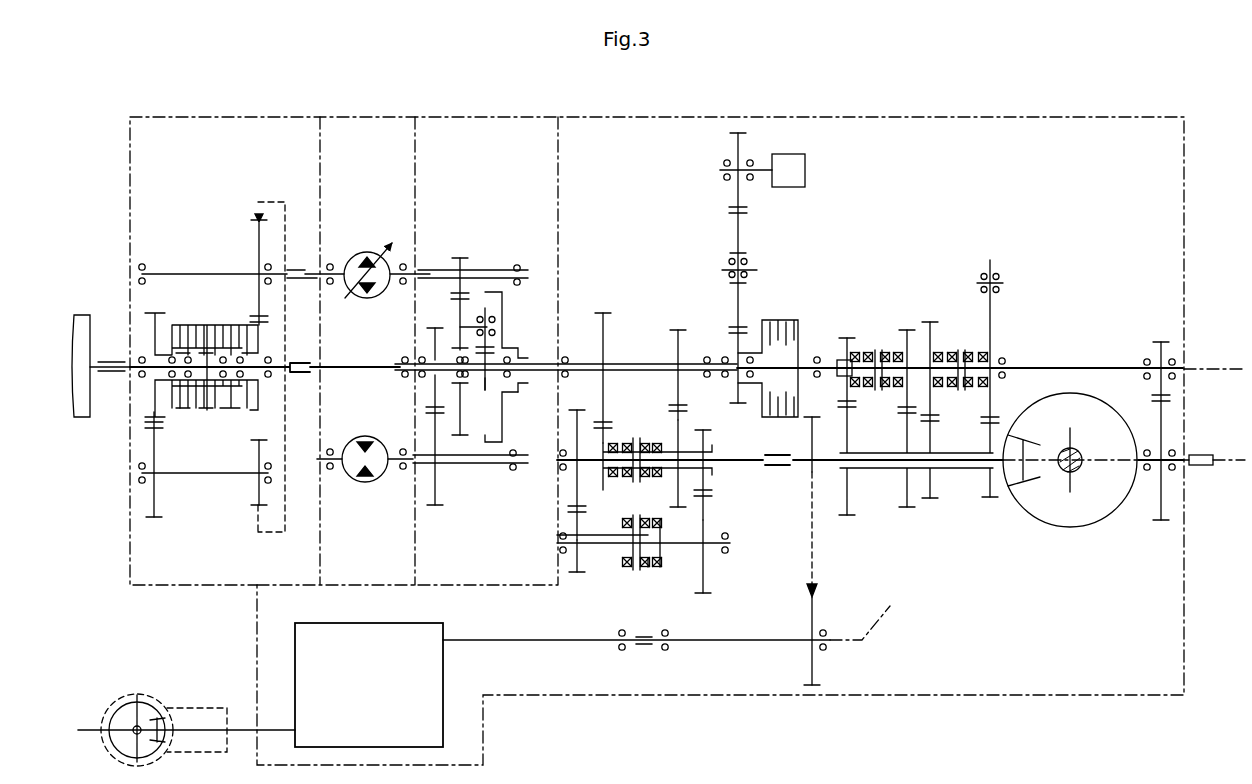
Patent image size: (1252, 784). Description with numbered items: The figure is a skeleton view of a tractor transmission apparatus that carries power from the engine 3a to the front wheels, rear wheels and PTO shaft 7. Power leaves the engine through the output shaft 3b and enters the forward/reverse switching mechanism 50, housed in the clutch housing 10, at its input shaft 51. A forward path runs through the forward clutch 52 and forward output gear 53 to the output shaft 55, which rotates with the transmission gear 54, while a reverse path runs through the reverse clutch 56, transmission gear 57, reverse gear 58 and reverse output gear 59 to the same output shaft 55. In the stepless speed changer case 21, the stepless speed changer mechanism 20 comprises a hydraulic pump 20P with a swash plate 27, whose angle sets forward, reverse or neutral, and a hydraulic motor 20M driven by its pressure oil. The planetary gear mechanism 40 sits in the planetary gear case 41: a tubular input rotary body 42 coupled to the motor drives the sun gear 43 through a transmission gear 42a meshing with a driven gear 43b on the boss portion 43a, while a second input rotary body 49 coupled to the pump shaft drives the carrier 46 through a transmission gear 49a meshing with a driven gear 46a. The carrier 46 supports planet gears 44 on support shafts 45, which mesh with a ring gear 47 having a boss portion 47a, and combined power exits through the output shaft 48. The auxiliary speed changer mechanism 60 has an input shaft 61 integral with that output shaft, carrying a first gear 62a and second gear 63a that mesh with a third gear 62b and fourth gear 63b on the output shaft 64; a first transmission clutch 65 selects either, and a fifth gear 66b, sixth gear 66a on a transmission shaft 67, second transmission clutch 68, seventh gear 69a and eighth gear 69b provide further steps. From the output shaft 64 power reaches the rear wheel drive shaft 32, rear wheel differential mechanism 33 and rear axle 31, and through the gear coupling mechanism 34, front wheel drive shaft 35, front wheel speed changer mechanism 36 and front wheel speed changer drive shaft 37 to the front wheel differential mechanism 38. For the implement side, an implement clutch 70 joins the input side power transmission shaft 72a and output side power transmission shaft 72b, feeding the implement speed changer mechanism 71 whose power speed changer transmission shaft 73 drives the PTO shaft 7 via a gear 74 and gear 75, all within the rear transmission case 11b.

The engine 3a is at (82, 314).
The output shaft 3b is at (105, 374).
The PTO shaft 7 is at (1206, 453).
The clutch housing 10 is at (245, 116).
The rear transmission case 11b is at (1066, 116).
The stepless speed changer mechanism 20 is at (375, 190).
The hydraulic pump 20P is at (378, 246).
The hydraulic motor 20M is at (383, 482).
The stepless speed changer case 21 is at (396, 116).
The swash plate 27 is at (352, 299).
The rear axle 31 is at (1078, 466).
The rear wheel drive shaft 32 is at (827, 467).
The rear wheel differential mechanism 33 is at (1014, 508).
The gear coupling mechanism 34 is at (830, 567).
The front wheel drive shaft 35 is at (722, 642).
The front wheel speed changer mechanism 36 is at (444, 732).
The front wheel speed changer drive shaft 37 is at (209, 712).
The front wheel differential mechanism 38 is at (150, 712).
The planetary gear mechanism 40 is at (480, 190).
The planetary gear case 41 is at (456, 116).
The input rotary body 42 is at (508, 467).
The transmission gear 42a is at (435, 507).
The sun gear 43 is at (485, 396).
The boss portion 43a is at (430, 392).
The driven gear 43b is at (430, 328).
The planet gears 44 is at (505, 305).
The support shafts 45 is at (468, 326).
The carrier 46 is at (452, 296).
The driven gear 46a is at (462, 438).
The ring gear 47 is at (505, 442).
The boss portion 47a is at (520, 386).
The output shaft 48 is at (546, 362).
The input rotary body 49 is at (428, 268).
The transmission gear 49a is at (460, 257).
The forward/reverse switching mechanism 50 is at (232, 190).
The input shaft 51 is at (134, 352).
The forward clutch 52 is at (215, 413).
The forward output gear 53 is at (250, 318).
The transmission gear 54 is at (250, 221).
The output shaft 55 is at (172, 273).
The reverse clutch 56 is at (195, 413).
The transmission gear 57 is at (153, 412).
The reverse gear 58 is at (154, 520).
The reverse output gear 59 is at (258, 507).
The auxiliary speed changer mechanism 60 is at (664, 224).
The input shaft 61 is at (640, 362).
The first gear 62a is at (603, 313).
The third gear 62b is at (610, 490).
The second gear 63a is at (678, 330).
The fourth gear 63b is at (688, 508).
The output shaft 64 is at (770, 456).
The first transmission clutch 65 is at (638, 438).
The sixth gear 66a is at (706, 596).
The fifth gear 66b is at (712, 494).
The transmission shaft 67 is at (697, 592).
The second transmission clutch 68 is at (652, 570).
The seventh gear 69a is at (576, 574).
The eighth gear 69b is at (579, 408).
The implement clutch 70 is at (781, 320).
The implement speed changer mechanism 71 is at (915, 290).
The input side power transmission shaft 72a is at (720, 360).
The output side power transmission shaft 72b is at (820, 360).
The power speed changer transmission shaft 73 is at (1038, 367).
The gear 74 is at (1161, 341).
The gear 75 is at (1161, 522).